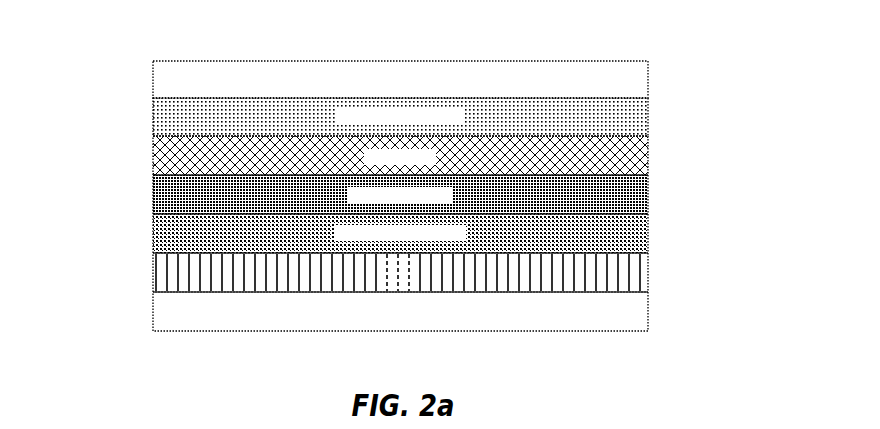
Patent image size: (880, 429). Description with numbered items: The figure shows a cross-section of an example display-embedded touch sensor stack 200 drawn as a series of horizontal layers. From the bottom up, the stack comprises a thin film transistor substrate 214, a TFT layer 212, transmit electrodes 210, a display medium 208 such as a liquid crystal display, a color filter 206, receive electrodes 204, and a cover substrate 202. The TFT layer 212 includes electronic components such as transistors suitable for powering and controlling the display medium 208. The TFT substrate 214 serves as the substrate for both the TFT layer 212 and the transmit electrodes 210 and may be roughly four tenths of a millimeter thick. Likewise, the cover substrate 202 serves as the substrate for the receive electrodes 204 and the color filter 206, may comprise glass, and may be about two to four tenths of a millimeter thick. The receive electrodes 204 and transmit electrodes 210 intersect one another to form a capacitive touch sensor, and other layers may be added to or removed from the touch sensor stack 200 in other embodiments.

The display-embedded touch sensor stack 200 is at (396, 179).
The cover substrate 202 is at (652, 79).
The receive electrodes 204 is at (148, 117).
The color filter 206 is at (652, 158).
The display medium 208 is at (148, 195).
The transmit electrodes 210 is at (652, 233).
The TFT layer 212 is at (148, 272).
The TFT substrate 214 is at (652, 311).